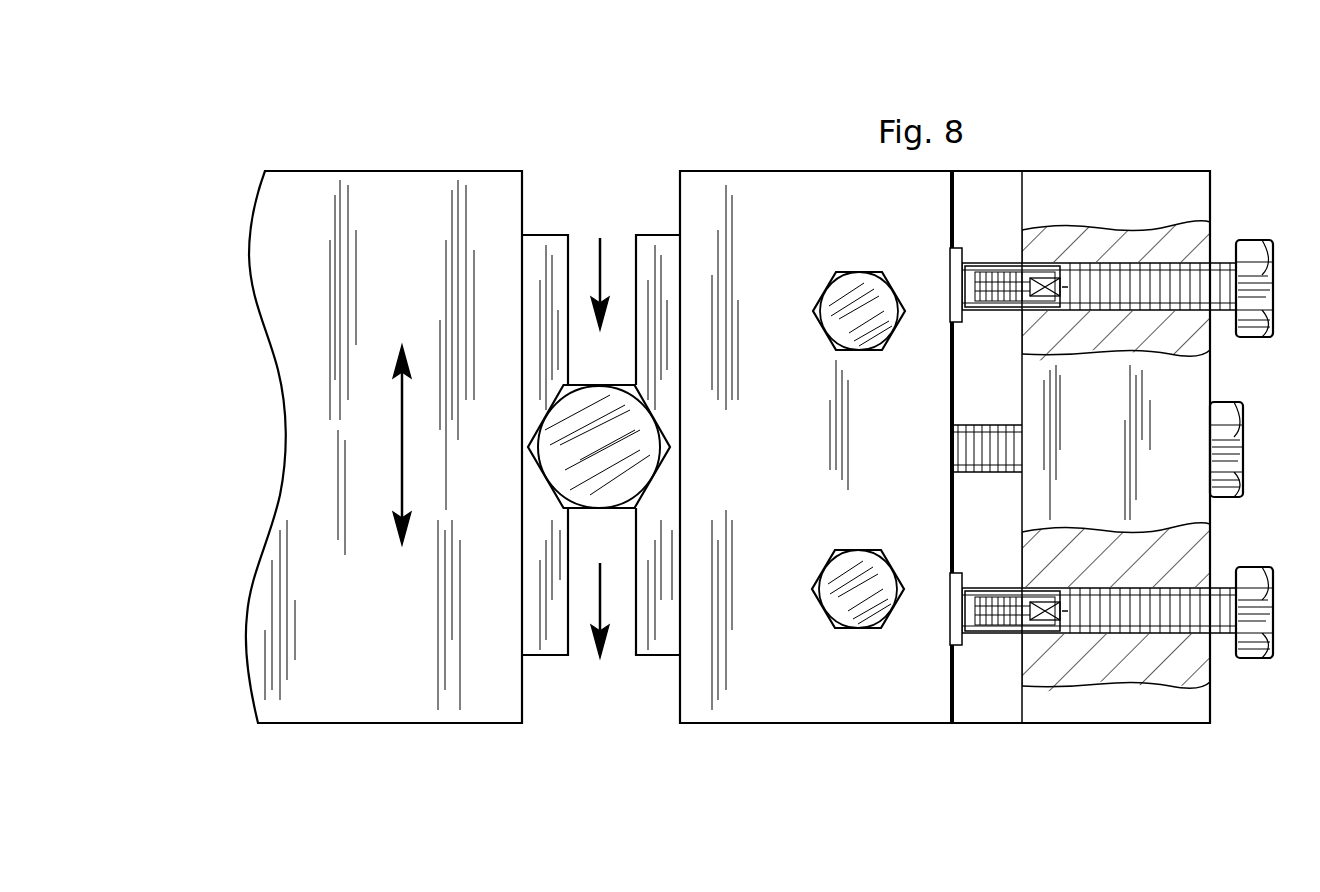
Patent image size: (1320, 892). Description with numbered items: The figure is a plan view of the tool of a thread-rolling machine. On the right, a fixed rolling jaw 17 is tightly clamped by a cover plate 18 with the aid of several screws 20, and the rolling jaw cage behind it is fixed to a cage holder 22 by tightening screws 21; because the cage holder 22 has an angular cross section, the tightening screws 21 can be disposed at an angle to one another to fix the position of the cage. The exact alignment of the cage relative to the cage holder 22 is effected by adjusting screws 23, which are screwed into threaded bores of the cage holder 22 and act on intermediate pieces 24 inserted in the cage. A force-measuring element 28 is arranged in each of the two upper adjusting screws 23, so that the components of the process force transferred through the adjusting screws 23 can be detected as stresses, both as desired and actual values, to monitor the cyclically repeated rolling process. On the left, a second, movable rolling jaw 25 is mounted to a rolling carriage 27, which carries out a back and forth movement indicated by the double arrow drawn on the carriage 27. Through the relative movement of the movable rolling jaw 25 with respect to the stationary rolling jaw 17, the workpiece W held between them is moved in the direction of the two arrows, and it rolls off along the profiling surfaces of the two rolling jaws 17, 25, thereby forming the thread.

The fixed rolling jaw 17 is at (655, 262).
The cover plate 18 is at (731, 193).
The screws 20 is at (862, 300).
The tightening screws 21 is at (1245, 452).
The cage holder 22 is at (1128, 194).
The adjusting screws 23 is at (1259, 252).
The intermediate pieces 24 is at (958, 256).
The movable rolling jaw 25 is at (545, 243).
The rolling carriage 27 is at (341, 190).
The force-measuring element 28 is at (1056, 273).
The workpiece W is at (607, 410).